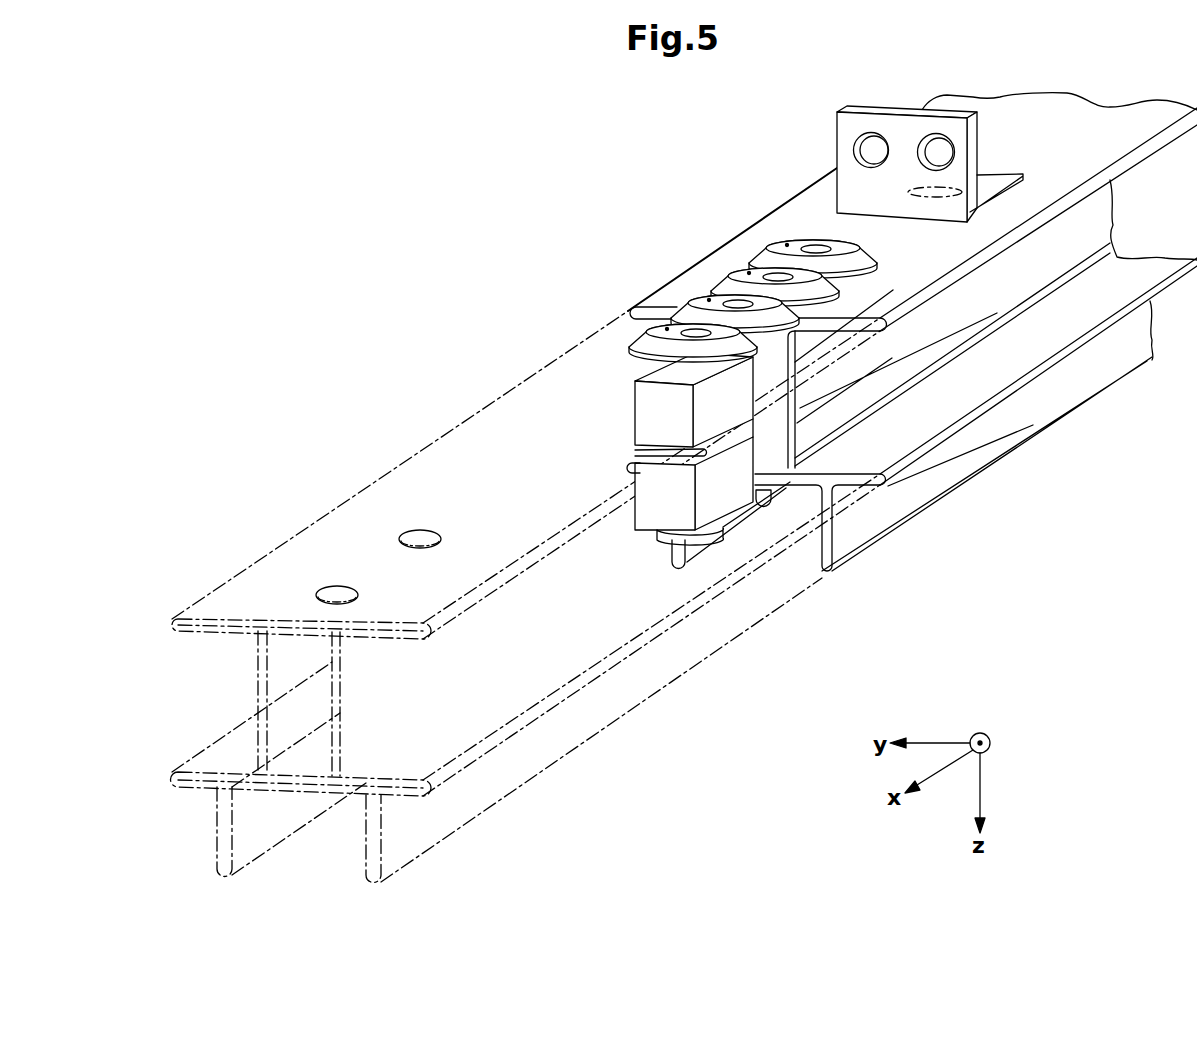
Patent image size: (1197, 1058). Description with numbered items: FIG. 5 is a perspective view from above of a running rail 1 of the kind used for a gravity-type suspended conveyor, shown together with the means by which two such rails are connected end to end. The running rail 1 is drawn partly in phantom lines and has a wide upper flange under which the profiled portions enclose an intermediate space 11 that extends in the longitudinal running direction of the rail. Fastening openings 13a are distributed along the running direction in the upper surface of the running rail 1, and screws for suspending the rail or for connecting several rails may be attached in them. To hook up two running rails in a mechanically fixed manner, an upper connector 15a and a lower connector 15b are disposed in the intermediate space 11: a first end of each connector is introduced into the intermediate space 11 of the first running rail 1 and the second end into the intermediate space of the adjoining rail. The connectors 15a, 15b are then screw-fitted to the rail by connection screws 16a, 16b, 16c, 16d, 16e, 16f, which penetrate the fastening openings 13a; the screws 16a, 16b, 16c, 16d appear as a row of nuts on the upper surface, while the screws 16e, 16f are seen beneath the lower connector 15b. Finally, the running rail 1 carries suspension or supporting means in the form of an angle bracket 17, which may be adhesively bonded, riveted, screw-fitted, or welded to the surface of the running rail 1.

The running rail 1 is at (684, 511).
The intermediate space 11 is at (296, 748).
The fastening openings 13a is at (412, 533).
The upper connector 15a is at (652, 407).
The lower connector 15b is at (655, 496).
The connection screw 16a is at (646, 329).
The connection screw 16b is at (690, 316).
The connection screw 16c is at (728, 275).
The connection screw 16d is at (768, 246).
The connection screw 16e is at (710, 535).
The connection screw 16f is at (762, 503).
The angle bracket 17 is at (849, 131).